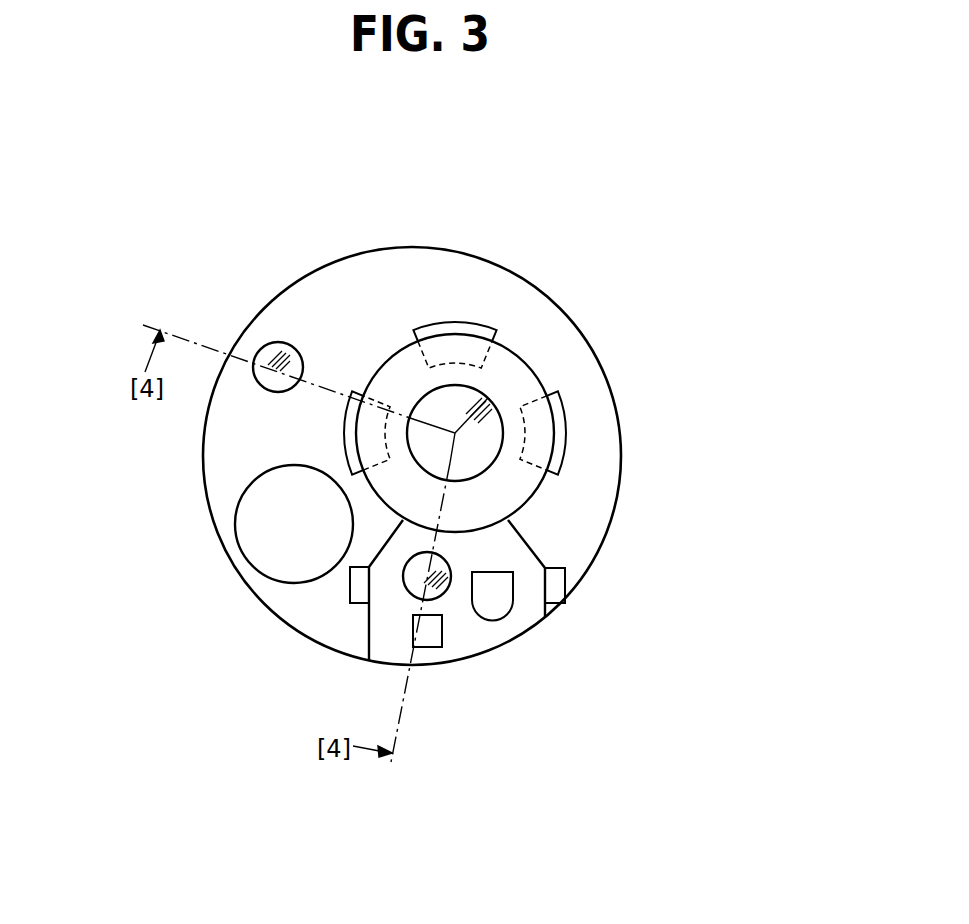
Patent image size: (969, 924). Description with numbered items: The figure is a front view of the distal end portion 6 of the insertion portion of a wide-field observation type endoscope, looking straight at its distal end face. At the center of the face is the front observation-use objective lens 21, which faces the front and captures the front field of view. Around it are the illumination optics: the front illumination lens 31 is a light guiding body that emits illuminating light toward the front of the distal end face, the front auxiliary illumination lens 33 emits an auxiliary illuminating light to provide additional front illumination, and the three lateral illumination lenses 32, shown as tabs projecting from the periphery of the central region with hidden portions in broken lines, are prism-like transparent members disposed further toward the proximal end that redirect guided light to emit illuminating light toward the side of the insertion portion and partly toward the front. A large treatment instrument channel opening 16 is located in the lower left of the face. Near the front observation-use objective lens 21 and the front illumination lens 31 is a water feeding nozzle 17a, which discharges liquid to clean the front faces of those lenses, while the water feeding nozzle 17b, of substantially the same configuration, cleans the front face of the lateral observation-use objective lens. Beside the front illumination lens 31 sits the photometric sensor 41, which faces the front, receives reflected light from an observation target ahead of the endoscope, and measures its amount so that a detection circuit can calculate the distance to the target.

The distal end portion 6 is at (570, 317).
The treatment instrument channel opening 16 is at (273, 547).
The water feeding nozzle 17a is at (492, 612).
The water feeding nozzle 17b is at (357, 592).
The front observation-use objective lens 21 is at (483, 460).
The front illumination lens 31 is at (412, 588).
The lateral illumination lens 32 is at (465, 350).
The front auxiliary illumination lens 33 is at (273, 381).
The photometric sensor 41 is at (422, 637).